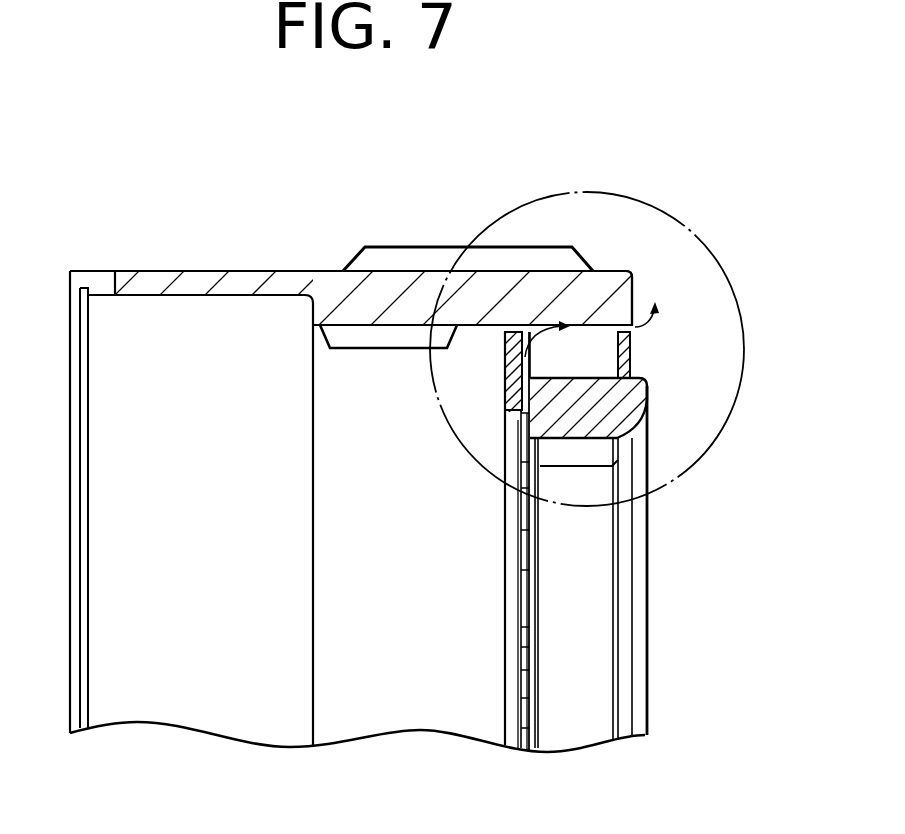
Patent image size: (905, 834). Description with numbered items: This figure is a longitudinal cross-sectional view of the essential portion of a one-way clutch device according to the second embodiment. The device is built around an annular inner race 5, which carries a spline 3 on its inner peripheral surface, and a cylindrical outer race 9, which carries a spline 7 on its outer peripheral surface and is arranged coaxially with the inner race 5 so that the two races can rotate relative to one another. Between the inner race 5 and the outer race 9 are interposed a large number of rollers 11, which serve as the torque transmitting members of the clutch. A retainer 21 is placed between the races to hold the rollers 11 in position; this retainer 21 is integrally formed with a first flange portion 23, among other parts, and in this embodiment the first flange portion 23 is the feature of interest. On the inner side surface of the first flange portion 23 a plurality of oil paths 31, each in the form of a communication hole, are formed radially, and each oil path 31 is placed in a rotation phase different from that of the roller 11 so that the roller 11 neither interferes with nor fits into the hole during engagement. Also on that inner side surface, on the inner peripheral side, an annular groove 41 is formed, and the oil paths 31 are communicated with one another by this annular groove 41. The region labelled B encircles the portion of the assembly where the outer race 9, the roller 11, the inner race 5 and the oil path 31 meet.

The spline 7 is at (399, 258).
The outer race 9 is at (612, 275).
The enlarged portion B is at (733, 250).
The roller 11 is at (600, 355).
The inner race 5 is at (615, 405).
The spline 3 is at (573, 458).
The oil path 31 is at (525, 380).
The retainer 21 is at (494, 583).
The first flange portion 23 is at (508, 637).
The annular groove 41 is at (521, 698).